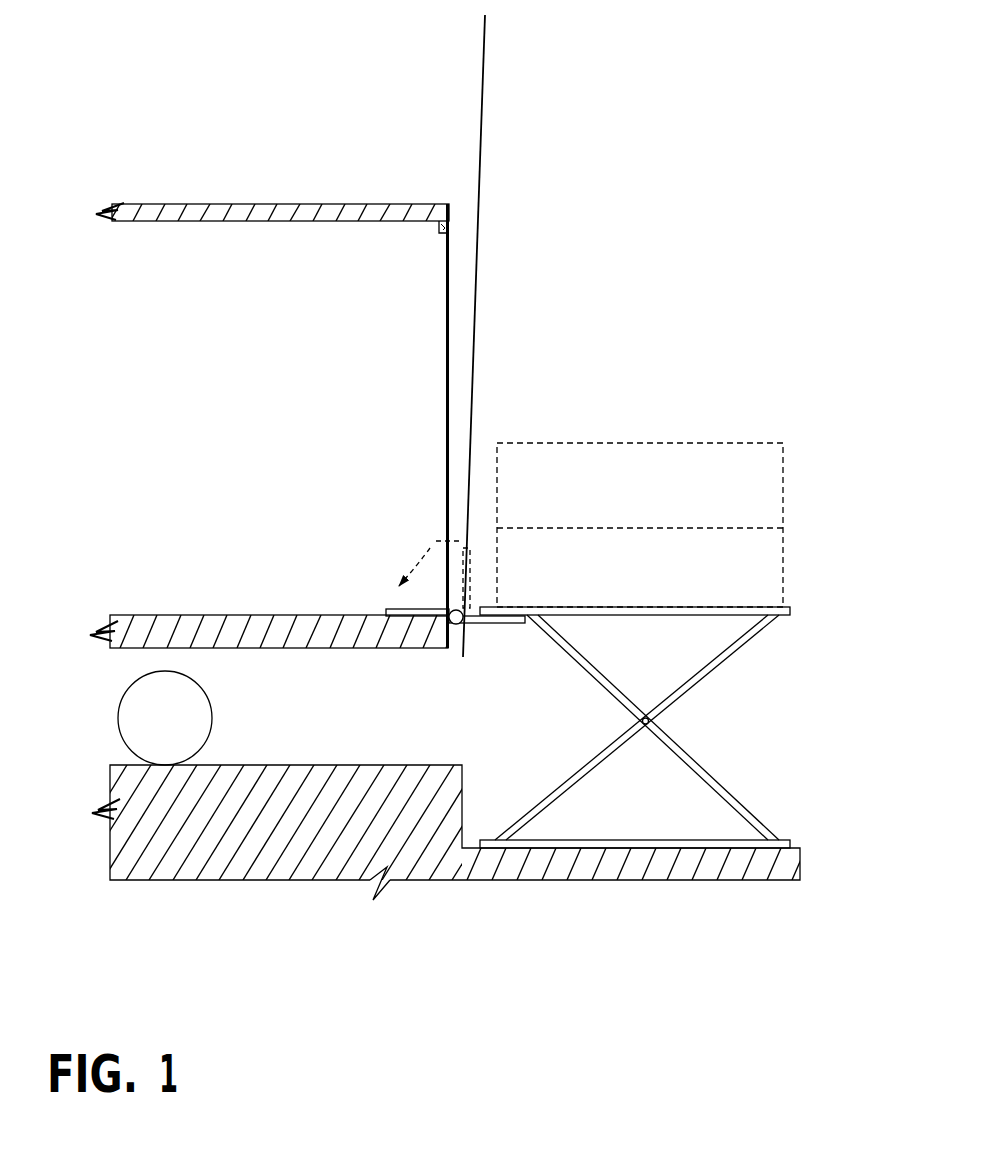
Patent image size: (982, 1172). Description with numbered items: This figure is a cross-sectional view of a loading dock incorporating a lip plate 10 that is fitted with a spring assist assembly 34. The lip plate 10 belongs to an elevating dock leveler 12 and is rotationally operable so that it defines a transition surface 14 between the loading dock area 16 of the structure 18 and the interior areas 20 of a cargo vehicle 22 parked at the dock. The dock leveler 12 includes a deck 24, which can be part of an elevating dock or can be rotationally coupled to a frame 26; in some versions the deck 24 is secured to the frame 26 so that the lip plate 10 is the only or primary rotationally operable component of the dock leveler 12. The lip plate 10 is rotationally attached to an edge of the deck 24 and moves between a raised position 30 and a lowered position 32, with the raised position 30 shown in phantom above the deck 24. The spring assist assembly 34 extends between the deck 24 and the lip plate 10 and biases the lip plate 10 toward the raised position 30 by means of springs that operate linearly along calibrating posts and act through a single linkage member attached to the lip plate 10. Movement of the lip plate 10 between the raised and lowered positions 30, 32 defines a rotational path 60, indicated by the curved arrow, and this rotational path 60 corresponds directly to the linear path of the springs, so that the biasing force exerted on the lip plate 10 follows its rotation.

The lip plate 10 is at (387, 610).
The elevating dock leveler 12 is at (519, 588).
The transition surface 14 is at (434, 598).
The loading dock area 16 is at (724, 604).
The structure 18 is at (476, 75).
The interior areas 20 is at (337, 456).
The cargo vehicle 22 is at (265, 202).
The deck 24 is at (555, 607).
The frame 26 is at (612, 848).
The raised position 30 is at (479, 558).
The lowered position 32 is at (395, 592).
The spring assist assembly 34 is at (495, 624).
The rotational path 60 is at (432, 540).